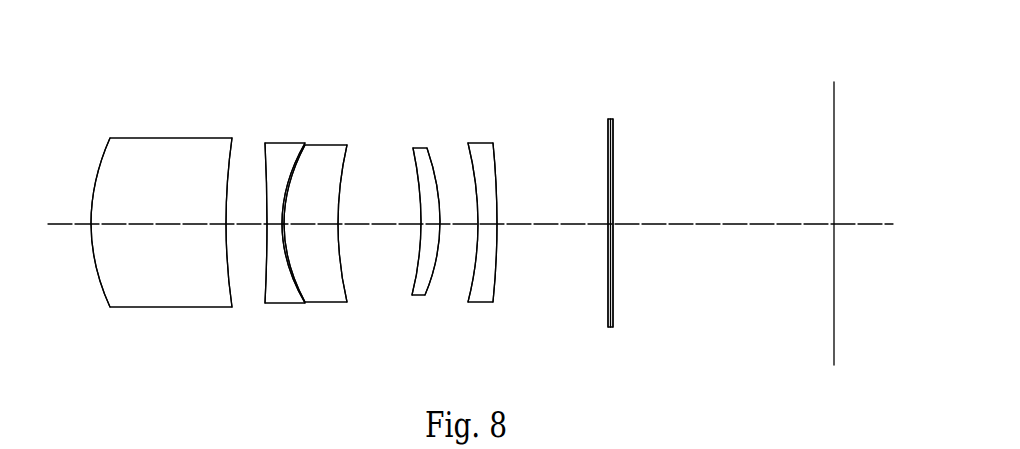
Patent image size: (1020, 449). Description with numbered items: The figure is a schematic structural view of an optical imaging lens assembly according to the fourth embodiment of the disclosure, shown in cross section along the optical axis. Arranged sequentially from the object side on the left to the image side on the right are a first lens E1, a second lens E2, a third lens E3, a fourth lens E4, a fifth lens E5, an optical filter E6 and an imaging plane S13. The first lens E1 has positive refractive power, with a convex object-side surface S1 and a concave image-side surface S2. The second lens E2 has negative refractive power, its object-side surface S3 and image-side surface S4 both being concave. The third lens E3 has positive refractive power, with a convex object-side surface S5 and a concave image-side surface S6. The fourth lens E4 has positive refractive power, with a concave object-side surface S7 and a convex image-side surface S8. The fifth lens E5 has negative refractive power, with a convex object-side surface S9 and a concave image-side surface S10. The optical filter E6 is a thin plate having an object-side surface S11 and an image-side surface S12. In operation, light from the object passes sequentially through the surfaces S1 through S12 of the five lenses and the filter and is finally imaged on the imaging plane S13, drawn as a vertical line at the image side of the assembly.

The first lens E1 is at (162, 137).
The second lens E2 is at (283, 143).
The third lens E3 is at (325, 145).
The fourth lens E4 is at (414, 148).
The fifth lens E5 is at (478, 143).
The optical filter E6 is at (612, 119).
The object-side surface of the first lens S1 is at (91, 224).
The image-side surface of the first lens S2 is at (226, 224).
The object-side surface of the second lens S3 is at (267, 224).
The image-side surface of the second lens S4 is at (282, 224).
The object-side surface of the third lens S5 is at (284, 224).
The image-side surface of the third lens S6 is at (338, 224).
The object-side surface of the fourth lens S7 is at (421, 224).
The image-side surface of the fourth lens S8 is at (440, 224).
The object-side surface of the fifth lens S9 is at (478, 224).
The image-side surface of the fifth lens S10 is at (497, 224).
The object-side surface of the optical filter S11 is at (608, 224).
The image-side surface of the optical filter S12 is at (613, 224).
The imaging plane S13 is at (834, 224).